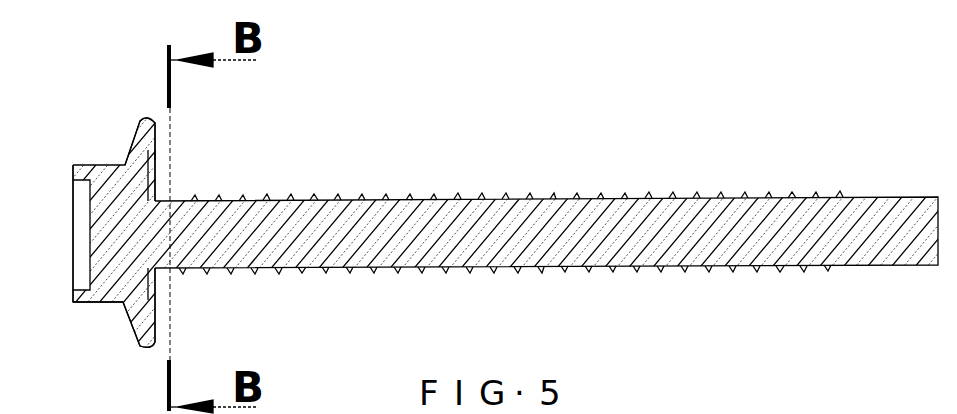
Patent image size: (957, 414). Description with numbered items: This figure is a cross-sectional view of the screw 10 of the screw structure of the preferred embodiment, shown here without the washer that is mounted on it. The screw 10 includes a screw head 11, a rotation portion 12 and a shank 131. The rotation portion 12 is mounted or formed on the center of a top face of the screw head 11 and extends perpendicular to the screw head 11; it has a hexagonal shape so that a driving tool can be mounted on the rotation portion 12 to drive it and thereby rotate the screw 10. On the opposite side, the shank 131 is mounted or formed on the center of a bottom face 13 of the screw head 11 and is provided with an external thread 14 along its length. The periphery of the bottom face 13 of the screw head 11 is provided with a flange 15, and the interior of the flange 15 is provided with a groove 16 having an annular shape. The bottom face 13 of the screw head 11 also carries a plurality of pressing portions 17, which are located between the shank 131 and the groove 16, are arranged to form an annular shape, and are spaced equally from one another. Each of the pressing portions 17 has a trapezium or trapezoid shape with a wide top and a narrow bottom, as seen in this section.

The screw 10 is at (478, 199).
The screw head 11 is at (70, 163).
The rotation portion 12 is at (100, 300).
The bottom face 13 is at (147, 187).
The shank 131 is at (160, 235).
The external thread 14 is at (555, 194).
The flange 15 is at (143, 120).
The groove 16 is at (147, 322).
The pressing portions 17 is at (153, 164).